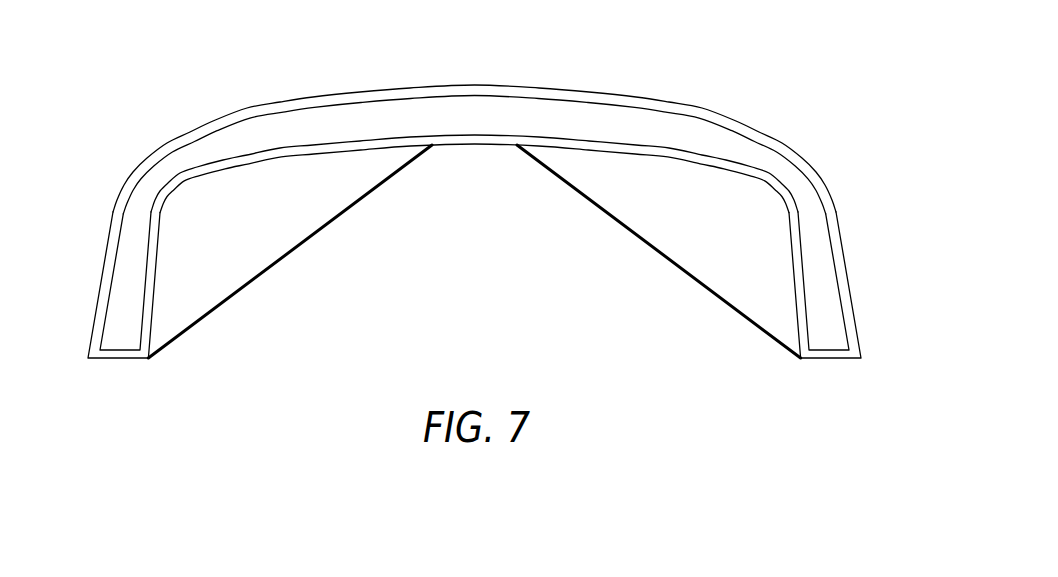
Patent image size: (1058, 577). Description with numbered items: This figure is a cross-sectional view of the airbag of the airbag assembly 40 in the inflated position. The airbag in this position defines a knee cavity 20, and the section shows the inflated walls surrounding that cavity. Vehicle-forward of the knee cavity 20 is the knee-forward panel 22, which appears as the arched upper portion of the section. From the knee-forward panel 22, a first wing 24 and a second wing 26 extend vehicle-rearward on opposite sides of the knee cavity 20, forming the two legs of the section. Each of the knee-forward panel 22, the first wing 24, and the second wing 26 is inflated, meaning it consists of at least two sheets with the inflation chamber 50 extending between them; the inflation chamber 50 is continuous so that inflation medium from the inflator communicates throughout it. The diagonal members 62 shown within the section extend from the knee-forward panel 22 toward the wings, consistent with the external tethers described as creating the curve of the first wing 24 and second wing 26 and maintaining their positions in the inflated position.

The knee cavity 20 is at (475, 218).
The knee-forward panel 22 is at (505, 85).
The first wing 24 is at (93, 305).
The second wing 26 is at (858, 305).
The airbag assembly 40 is at (727, 118).
The inflation chamber 50 is at (827, 293).
The diagonal support braces 62 is at (553, 173).